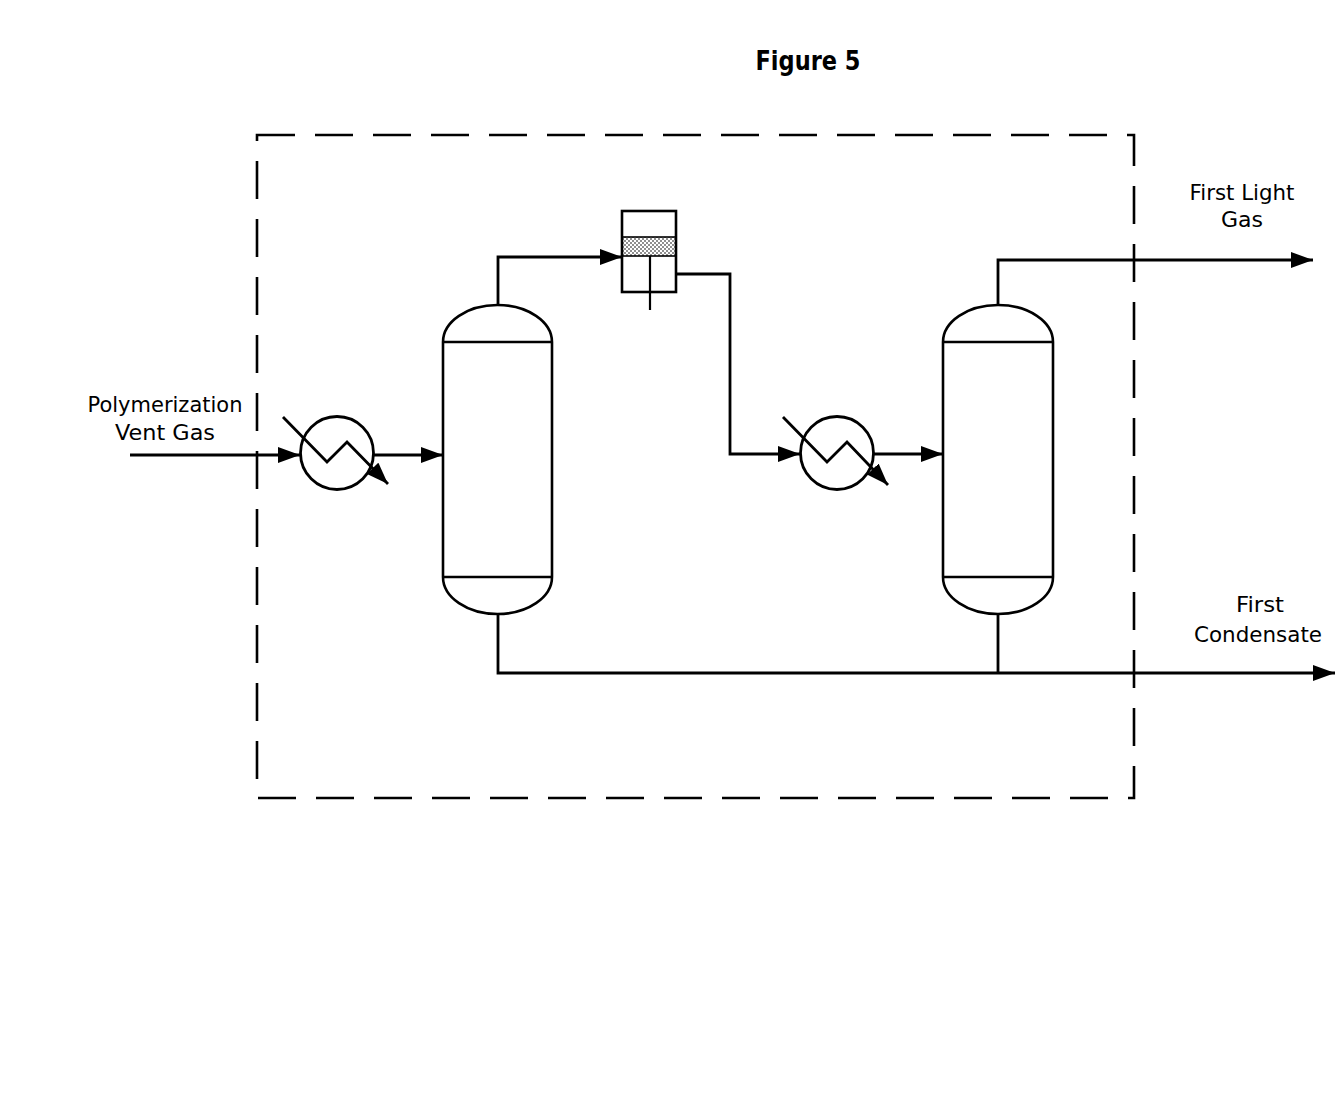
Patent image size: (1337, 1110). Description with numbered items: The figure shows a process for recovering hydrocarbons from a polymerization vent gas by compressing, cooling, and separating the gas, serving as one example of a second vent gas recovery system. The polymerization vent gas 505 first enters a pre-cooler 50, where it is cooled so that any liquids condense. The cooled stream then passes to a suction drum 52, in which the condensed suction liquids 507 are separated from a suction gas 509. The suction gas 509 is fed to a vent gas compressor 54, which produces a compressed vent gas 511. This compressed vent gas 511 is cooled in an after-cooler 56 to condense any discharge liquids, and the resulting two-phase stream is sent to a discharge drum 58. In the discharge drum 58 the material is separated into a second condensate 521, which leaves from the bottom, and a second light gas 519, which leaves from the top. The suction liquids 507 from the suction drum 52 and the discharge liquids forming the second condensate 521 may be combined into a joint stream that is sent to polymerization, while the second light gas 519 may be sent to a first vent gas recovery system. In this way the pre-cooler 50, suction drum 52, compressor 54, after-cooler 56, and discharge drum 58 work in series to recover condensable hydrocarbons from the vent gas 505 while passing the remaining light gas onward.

The pre-cooler 50 is at (363, 422).
The suction drum 52 is at (497, 459).
The vent gas compressor 54 is at (622, 211).
The after-cooler 56 is at (825, 417).
The discharge drum 58 is at (998, 459).
The polymerization vent gas 505 is at (215, 479).
The suction liquids 507 is at (916, 643).
The suction gas 509 is at (560, 259).
The compressed vent gas 511 is at (738, 364).
The second light gas 519 is at (1155, 265).
The second condensate 521 is at (1048, 642).